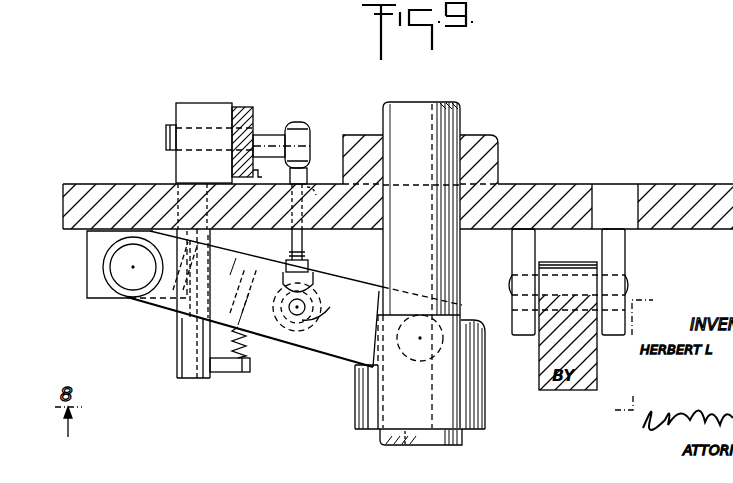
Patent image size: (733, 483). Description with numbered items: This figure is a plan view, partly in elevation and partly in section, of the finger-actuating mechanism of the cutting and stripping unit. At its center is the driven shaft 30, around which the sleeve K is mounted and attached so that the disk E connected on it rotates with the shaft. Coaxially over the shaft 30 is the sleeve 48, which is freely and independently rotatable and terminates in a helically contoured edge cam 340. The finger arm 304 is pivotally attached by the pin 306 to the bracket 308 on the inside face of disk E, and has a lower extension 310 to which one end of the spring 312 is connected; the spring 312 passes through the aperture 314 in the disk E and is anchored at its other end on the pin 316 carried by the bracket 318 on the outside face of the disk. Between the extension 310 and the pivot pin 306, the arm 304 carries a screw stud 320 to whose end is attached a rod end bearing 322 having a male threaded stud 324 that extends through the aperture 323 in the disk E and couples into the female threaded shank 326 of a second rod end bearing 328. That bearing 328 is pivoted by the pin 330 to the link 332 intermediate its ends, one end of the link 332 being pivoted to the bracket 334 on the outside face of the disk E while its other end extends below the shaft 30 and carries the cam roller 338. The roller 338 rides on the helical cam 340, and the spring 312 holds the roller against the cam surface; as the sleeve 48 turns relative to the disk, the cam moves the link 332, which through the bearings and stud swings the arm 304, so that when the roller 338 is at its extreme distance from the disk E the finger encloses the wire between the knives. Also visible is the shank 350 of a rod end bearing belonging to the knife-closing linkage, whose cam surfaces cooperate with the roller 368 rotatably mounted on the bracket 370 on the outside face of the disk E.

The driven shaft 30 is at (460, 112).
The sleeve 48 is at (485, 405).
The arm 304 is at (252, 90).
The pin 306 is at (274, 132).
The bracket 308 is at (175, 120).
The lower extension 310 is at (256, 165).
The spring 312 is at (247, 346).
The aperture 314 is at (257, 241).
The pin 316 is at (232, 373).
The bracket 318 is at (188, 335).
The screw stud 320 is at (283, 124).
The rod end bearing 322 is at (310, 123).
The aperture 323 is at (310, 180).
The male threaded stud 324 is at (302, 249).
The female threaded shank 326 is at (309, 268).
The rod end bearing 328 is at (320, 327).
The pin 330 is at (324, 307).
The link 332 is at (338, 356).
The bracket 334 is at (93, 277).
The cam roller 338 is at (461, 309).
The helically contoured edge cam 340 is at (378, 358).
The shank 350 is at (587, 362).
The roller 368 is at (575, 253).
The bracket 370 is at (513, 258).
The sleeve K is at (498, 152).
The disk E is at (707, 185).